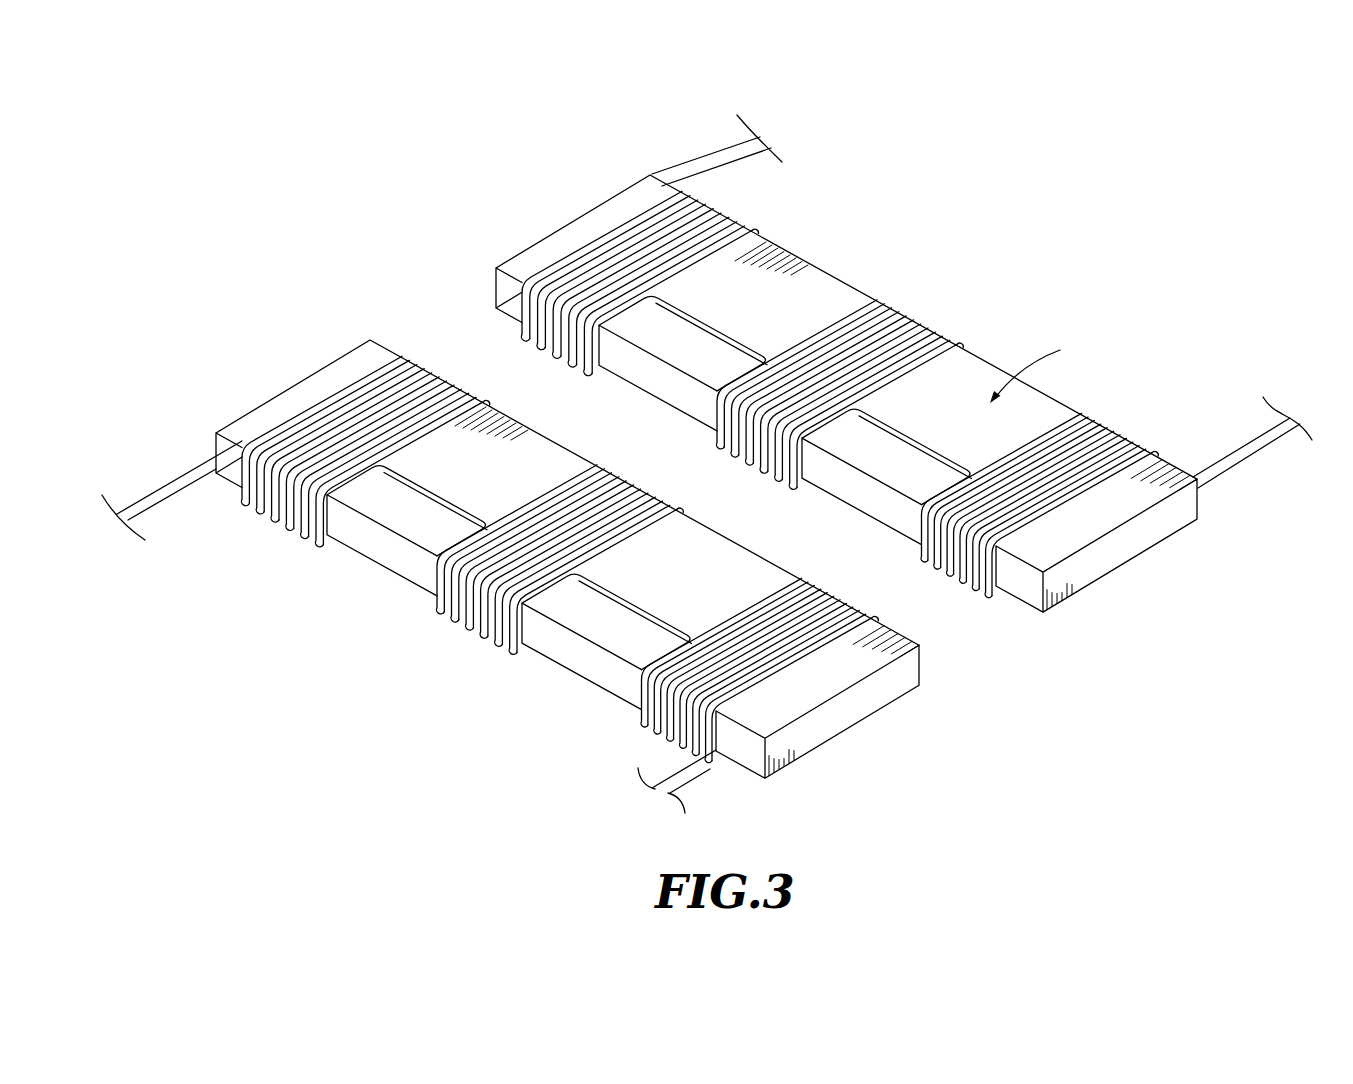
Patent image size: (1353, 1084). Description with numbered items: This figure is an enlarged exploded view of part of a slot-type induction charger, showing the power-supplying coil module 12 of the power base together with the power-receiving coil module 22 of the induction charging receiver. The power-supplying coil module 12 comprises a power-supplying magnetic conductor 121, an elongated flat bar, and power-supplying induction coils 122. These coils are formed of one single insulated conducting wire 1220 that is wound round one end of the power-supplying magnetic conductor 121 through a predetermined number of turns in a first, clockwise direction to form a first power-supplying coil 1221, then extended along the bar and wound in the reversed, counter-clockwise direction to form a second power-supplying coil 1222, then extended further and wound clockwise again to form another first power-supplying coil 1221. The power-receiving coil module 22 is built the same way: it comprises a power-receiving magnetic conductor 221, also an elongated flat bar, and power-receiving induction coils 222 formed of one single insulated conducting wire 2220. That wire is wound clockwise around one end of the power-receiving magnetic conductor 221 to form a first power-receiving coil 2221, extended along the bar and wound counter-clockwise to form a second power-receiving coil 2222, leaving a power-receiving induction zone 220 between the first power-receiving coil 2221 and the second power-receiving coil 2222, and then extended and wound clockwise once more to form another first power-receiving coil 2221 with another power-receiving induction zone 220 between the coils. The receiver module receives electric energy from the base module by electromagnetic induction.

The power-supplying coil module 12 is at (530, 581).
The power-supplying magnetic conductor 121 is at (866, 704).
The power-supplying induction coils 122 is at (490, 589).
The insulated conducting wire 1220 is at (325, 742).
The first power-supplying coil 1221 is at (293, 512).
The second power-supplying coil 1222 is at (470, 597).
The power-receiving coil module 22 is at (904, 376).
The power-receiving magnetic conductor 221 is at (1158, 528).
The power-receiving induction coils 222 is at (916, 356).
The power-receiving induction zone 220 is at (1051, 367).
The insulated conducting wire 2220 is at (1262, 437).
The first power-receiving coil 2221 is at (733, 227).
The second power-receiving coil 2222 is at (920, 313).